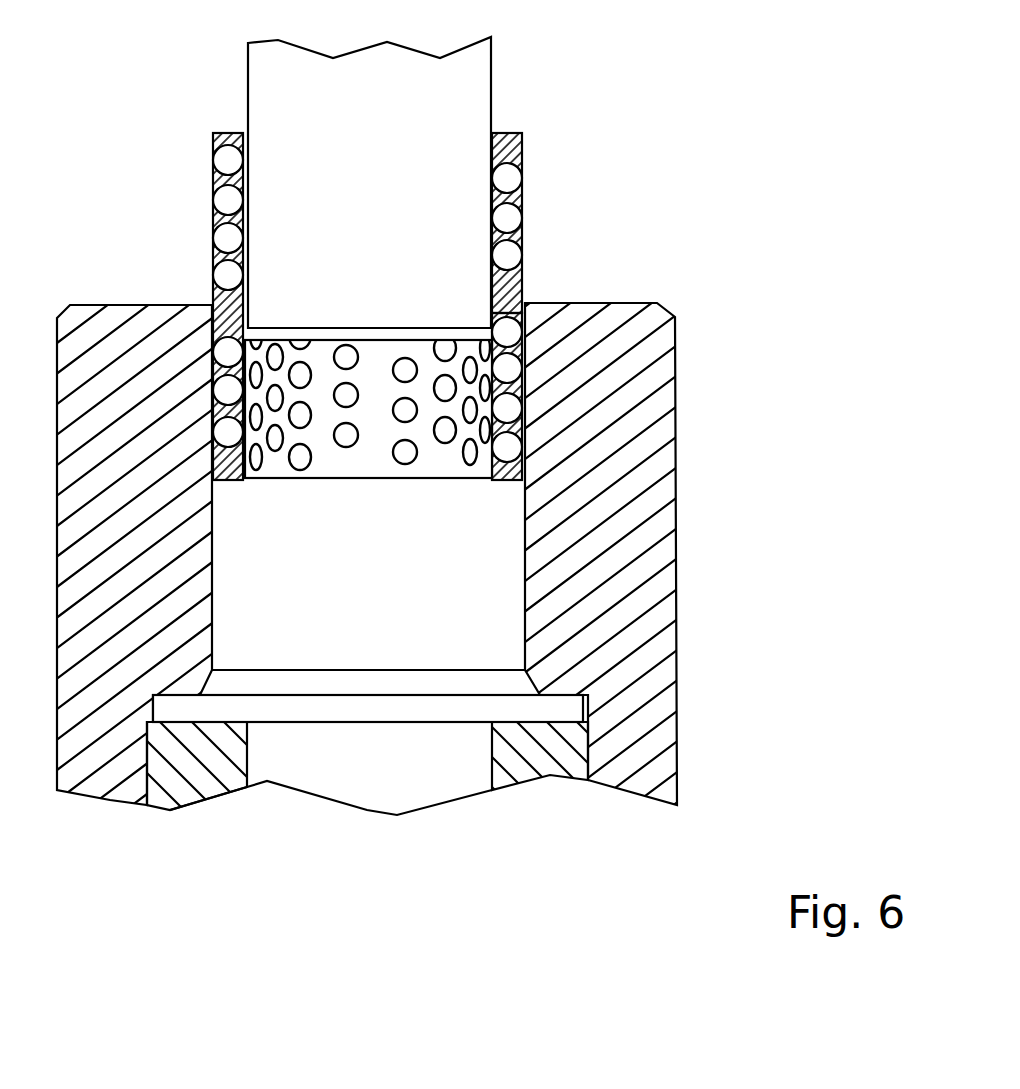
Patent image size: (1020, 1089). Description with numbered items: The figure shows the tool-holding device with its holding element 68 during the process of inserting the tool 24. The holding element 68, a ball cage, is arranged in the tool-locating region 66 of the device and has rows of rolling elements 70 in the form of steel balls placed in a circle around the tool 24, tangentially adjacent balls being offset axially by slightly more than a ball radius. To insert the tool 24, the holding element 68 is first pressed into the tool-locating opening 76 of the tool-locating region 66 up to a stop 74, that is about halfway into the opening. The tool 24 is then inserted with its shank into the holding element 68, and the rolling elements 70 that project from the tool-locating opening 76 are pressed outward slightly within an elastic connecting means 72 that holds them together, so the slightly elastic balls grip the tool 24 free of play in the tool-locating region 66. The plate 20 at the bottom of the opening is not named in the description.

The plate 20 is at (588, 710).
The tool 24 is at (438, 100).
The tool-locating region 66 is at (590, 478).
The holding element 68 is at (554, 298).
The rolling elements 70 is at (510, 332).
The elastic connecting means 72 is at (525, 148).
The stop 74 is at (527, 302).
The tool-locating opening 76 is at (422, 600).